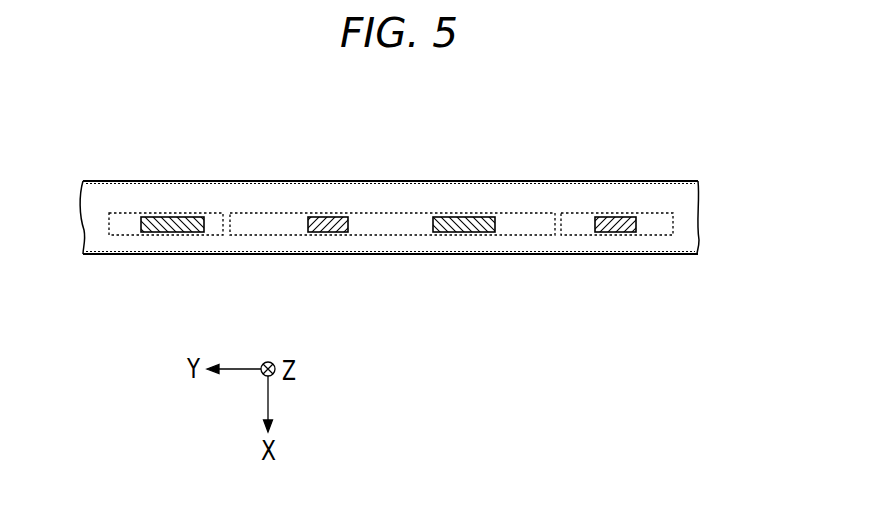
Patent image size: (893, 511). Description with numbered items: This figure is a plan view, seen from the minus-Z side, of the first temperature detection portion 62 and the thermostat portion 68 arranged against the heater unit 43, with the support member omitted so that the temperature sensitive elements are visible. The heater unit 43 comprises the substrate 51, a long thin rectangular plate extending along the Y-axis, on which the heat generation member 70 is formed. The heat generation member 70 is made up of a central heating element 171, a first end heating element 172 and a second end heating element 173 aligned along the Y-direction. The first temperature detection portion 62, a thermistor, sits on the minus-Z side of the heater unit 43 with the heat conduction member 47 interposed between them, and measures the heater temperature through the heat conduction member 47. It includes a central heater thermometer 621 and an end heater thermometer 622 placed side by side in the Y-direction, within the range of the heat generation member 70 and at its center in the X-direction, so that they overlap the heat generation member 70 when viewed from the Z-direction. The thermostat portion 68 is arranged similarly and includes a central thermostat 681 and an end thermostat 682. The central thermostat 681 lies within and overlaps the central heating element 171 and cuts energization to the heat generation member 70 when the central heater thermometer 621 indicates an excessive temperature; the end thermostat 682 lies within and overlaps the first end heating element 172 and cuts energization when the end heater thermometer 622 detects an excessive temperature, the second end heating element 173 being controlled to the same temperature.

The heater unit 43 is at (397, 160).
The substrate 51 is at (92, 203).
The heat conduction member 47 is at (102, 205).
The heat generation member 70 is at (391, 173).
The central heating element 171 is at (385, 213).
The first end heating element 172 is at (207, 213).
The second end heating element 173 is at (578, 214).
The thermostat portion 68 is at (350, 277).
The central thermostat 681 is at (485, 232).
The end thermostat 682 is at (183, 232).
The first temperature detection portion 62 is at (497, 275).
The central heater thermometer 621 is at (322, 232).
The end heater thermometer 622 is at (627, 232).